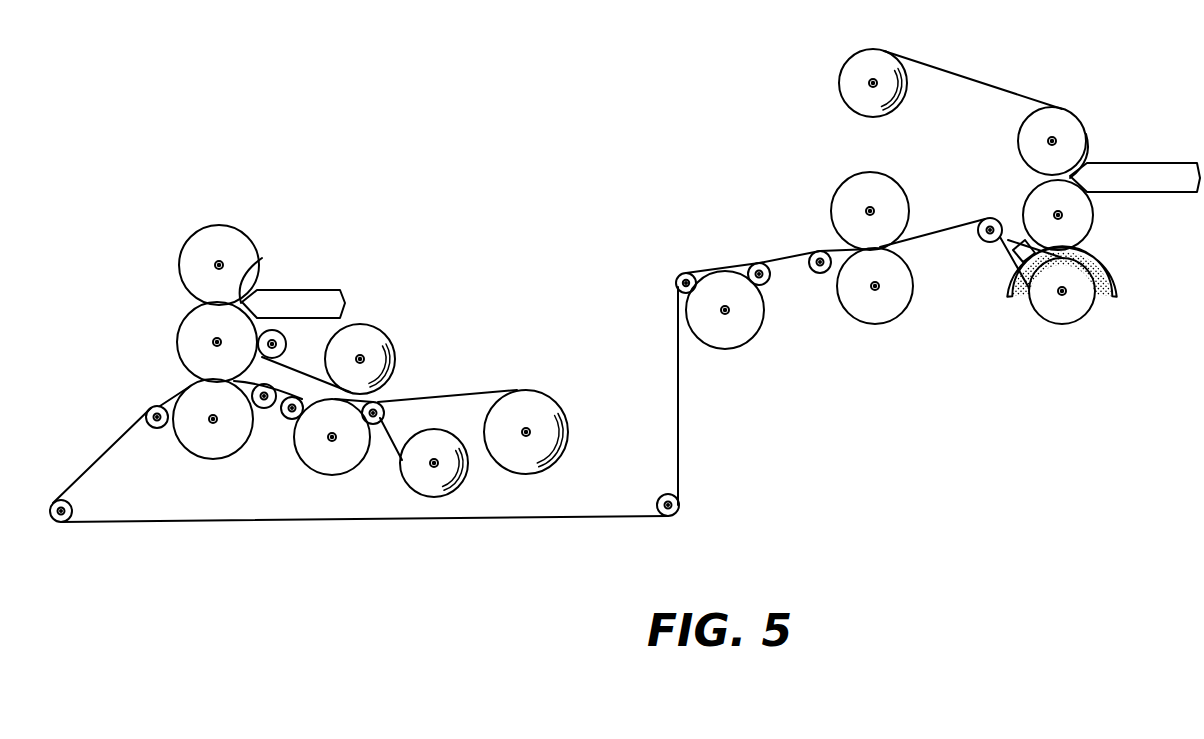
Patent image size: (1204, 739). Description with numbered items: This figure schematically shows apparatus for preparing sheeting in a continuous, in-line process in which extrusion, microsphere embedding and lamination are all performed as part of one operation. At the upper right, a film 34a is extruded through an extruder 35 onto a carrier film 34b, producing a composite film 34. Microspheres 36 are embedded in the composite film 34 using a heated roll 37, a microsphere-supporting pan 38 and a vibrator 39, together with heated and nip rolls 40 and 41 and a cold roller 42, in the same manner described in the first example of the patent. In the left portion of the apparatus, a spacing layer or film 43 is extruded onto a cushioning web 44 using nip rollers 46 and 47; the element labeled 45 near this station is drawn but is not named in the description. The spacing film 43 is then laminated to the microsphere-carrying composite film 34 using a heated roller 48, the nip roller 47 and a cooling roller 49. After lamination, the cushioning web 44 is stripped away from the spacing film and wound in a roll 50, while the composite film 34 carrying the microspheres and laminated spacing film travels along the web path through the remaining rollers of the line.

The composite film 34 is at (455, 520).
The film 34a is at (1080, 147).
The carrier film 34b is at (1000, 90).
The extruder 35 is at (1160, 165).
The microspheres 36 is at (1030, 335).
The heated roll 37 is at (1090, 280).
The microsphere-supporting pan 38 is at (1088, 338).
The vibrator 39 is at (1017, 255).
The heated and nip roll 40 is at (897, 310).
The heated and nip roll 41 is at (893, 186).
The cold roller 42 is at (747, 330).
The spacing layer or film 43 is at (263, 263).
The cushioning web 44 is at (301, 366).
The guide plate 45 is at (324, 297).
The nip roller 46 is at (219, 233).
The nip roller 47 is at (187, 340).
The heated roller 48 is at (228, 447).
The cooling roller 49 is at (328, 467).
The roll 50 is at (552, 402).